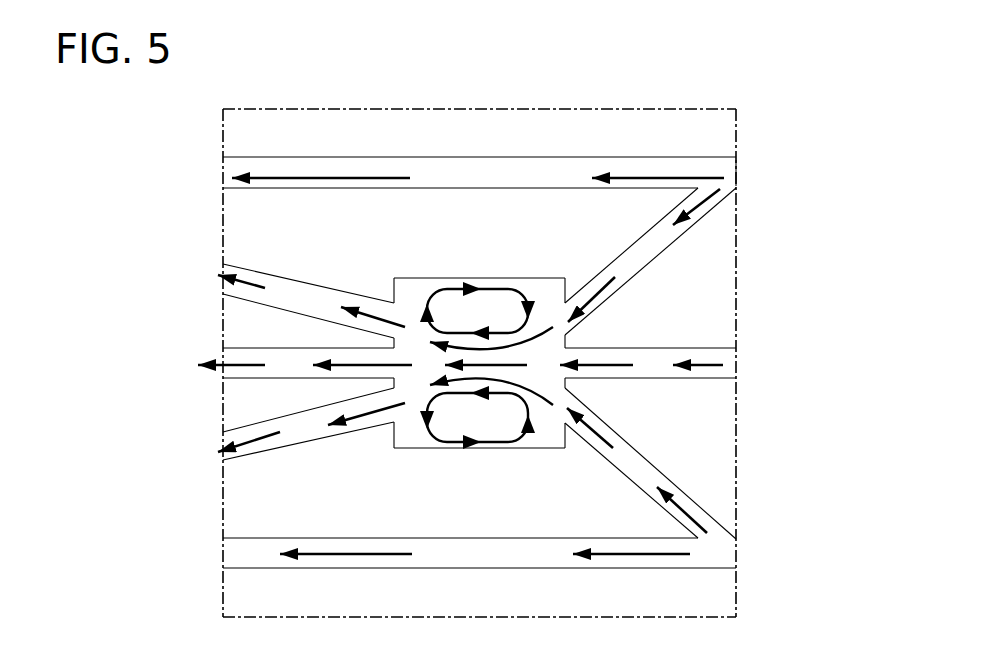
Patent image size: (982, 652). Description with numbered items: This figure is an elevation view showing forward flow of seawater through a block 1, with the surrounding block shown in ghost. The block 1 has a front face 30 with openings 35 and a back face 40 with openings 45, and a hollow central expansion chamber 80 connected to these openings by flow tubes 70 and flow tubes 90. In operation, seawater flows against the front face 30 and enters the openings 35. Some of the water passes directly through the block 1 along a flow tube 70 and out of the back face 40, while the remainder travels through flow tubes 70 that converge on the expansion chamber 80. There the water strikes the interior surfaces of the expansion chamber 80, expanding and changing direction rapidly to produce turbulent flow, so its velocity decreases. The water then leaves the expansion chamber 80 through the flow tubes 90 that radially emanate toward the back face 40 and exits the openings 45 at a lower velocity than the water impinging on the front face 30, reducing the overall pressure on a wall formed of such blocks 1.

The block 1 is at (630, 108).
The front face 30 is at (739, 463).
The openings 35 is at (738, 175).
The back face 40 is at (221, 212).
The openings 45 is at (228, 165).
The flow tubes 70 is at (273, 193).
The expansion chamber 80 is at (420, 280).
The flow tubes 90 is at (315, 290).